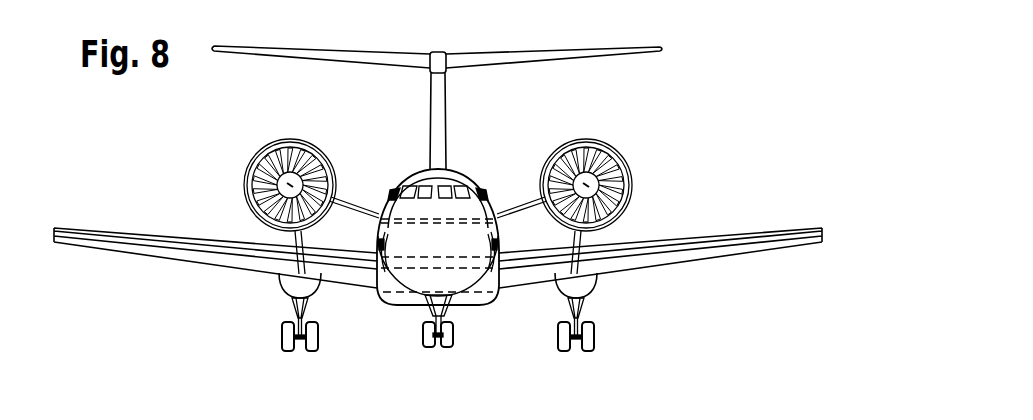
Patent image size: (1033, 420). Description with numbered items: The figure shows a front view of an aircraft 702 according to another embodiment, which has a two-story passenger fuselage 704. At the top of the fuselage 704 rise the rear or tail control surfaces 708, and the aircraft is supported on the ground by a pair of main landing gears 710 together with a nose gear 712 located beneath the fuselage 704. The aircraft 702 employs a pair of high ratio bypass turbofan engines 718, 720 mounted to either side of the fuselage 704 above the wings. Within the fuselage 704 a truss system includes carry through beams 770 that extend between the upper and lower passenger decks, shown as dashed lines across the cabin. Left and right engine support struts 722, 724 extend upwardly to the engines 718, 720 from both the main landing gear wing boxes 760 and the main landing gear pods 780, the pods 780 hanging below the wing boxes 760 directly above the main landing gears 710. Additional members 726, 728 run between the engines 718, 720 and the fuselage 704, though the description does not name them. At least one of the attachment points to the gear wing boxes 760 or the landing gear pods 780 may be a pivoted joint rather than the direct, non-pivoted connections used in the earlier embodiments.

The aircraft 702 is at (739, 91).
The fuselage 704 is at (501, 229).
The rear or tail control surfaces 708 is at (578, 46).
The main landing gear 710 is at (283, 344).
The nose gear 712 is at (453, 340).
The high ratio bypass turbofan engine 718 is at (629, 166).
The high ratio bypass turbofan engine 720 is at (327, 153).
The engine support strut 722 is at (580, 243).
The engine support strut 724 is at (295, 243).
The right strut 726 is at (517, 206).
The left strut 728 is at (348, 214).
The main landing gear wing box 760 is at (282, 269).
The carry through beam 770 is at (457, 222).
The main landing gear pod 780 is at (279, 296).